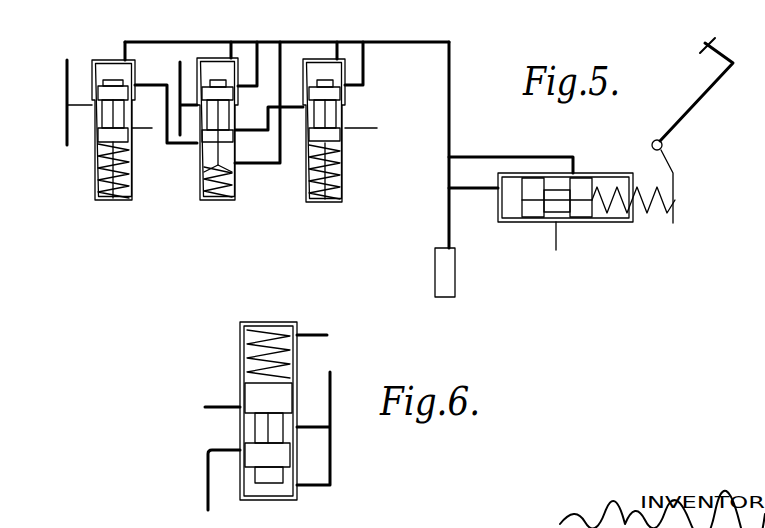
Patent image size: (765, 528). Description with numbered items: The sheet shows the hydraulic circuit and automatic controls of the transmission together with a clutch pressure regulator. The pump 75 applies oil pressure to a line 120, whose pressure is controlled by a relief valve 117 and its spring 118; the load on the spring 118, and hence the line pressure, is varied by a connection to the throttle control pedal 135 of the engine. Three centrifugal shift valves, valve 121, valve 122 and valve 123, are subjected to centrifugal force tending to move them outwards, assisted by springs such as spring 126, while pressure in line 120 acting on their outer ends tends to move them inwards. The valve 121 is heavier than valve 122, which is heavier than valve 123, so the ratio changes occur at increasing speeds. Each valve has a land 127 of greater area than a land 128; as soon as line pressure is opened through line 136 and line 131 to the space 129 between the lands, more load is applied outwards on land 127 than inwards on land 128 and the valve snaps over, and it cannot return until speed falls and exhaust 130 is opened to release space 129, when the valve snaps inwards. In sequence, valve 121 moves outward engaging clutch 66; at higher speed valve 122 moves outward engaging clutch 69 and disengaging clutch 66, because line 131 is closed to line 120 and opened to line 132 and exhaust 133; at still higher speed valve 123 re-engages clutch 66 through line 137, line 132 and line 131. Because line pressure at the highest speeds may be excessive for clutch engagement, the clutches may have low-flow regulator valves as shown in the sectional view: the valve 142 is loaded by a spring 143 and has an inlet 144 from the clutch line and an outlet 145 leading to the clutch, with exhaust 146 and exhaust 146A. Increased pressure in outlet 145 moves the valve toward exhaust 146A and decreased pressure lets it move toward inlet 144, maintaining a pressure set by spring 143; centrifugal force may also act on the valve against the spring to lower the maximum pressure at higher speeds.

In FIG. 5, the clutch 66 is at (70, 78).
In FIG. 5, the clutch 69 is at (180, 63).
In FIG. 5, the pump 75 is at (435, 262).
In FIG. 5, the relief valve 117 is at (550, 190).
In FIG. 5, the spring 118 is at (650, 215).
In FIG. 5, the line 120 is at (451, 60).
In FIG. 5, the valve 121 is at (110, 92).
In FIG. 5, the valve 122 is at (218, 117).
In FIG. 5, the valve 123 is at (346, 110).
In FIG. 5, the spring 126 is at (345, 167).
In FIG. 5, the land 127 is at (94, 97).
In FIG. 5, the land 128 is at (102, 170).
In FIG. 5, the space 129 is at (107, 115).
In FIG. 5, the exhaust 130 is at (143, 133).
In FIG. 5, the line 131 is at (185, 147).
In FIG. 5, the line 132 is at (292, 110).
In FIG. 5, the exhaust 133 is at (362, 128).
In FIG. 5, the throttle control pedal 135 is at (706, 46).
In FIG. 5, the line 136 is at (252, 163).
In FIG. 5, the line 137 is at (366, 64).
In FIG. 6, the valve 142 is at (278, 393).
In FIG. 6, the spring 143 is at (268, 333).
In FIG. 6, the inlet 144 is at (205, 473).
In FIG. 6, the outlet 145 is at (332, 450).
In FIG. 6, the exhaust 146 is at (308, 333).
In FIG. 6, the exhaust 146A is at (222, 405).